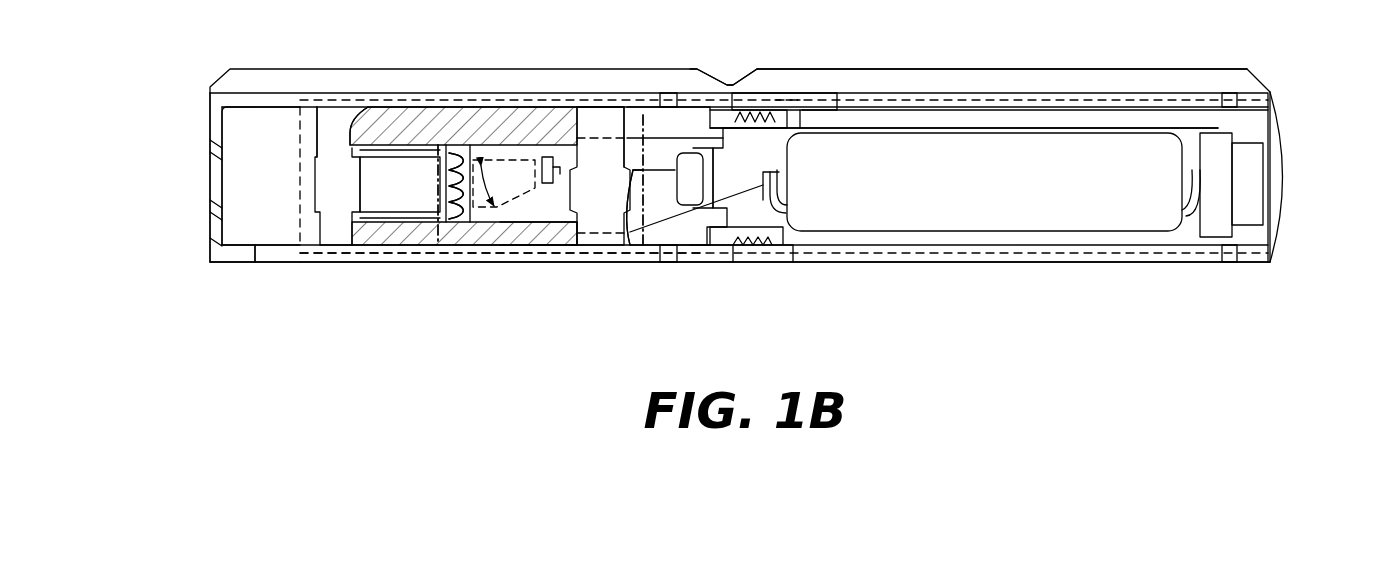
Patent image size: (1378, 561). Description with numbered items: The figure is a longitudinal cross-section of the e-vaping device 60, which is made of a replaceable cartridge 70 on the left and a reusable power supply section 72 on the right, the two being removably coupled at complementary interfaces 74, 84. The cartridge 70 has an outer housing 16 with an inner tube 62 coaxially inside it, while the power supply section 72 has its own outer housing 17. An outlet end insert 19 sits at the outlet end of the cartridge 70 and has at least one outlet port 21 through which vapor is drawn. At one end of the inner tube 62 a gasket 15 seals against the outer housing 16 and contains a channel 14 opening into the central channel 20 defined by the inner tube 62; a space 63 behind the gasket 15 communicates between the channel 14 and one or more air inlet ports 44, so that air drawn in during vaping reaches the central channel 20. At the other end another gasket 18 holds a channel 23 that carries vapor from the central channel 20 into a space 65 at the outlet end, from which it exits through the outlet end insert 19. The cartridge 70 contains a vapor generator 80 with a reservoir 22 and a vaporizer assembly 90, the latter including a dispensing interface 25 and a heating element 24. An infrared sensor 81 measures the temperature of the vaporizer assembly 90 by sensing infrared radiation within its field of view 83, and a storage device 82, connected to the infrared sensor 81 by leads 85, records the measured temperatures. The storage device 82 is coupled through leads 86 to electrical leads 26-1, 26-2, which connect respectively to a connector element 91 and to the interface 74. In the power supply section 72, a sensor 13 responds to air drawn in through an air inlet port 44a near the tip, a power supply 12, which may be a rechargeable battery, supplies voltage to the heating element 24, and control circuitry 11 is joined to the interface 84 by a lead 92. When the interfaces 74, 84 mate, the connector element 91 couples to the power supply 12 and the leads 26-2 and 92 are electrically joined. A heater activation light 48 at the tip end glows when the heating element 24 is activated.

The control circuitry 11 is at (1207, 185).
The power supply 12 is at (984, 182).
The sensor 13 is at (1247, 184).
The channel 14 is at (600, 176).
The gasket 15 is at (590, 130).
The outer housing 16 is at (280, 262).
The outer housing 17 is at (918, 262).
The gasket 18 is at (328, 127).
The outlet end insert 19 is at (222, 262).
The central channel 20 is at (400, 184).
The outlet port 21 is at (208, 150).
The reservoir 22 is at (458, 286).
The channel 23 is at (337, 176).
The heating element 24 is at (437, 160).
The dispensing interface 25 is at (437, 185).
The electrical lead 26-1 is at (651, 243).
The electrical lead 26-2 is at (656, 147).
The air inlet port 44 is at (668, 98).
The air inlet port 44a is at (1229, 93).
The heater activation light 48 is at (1290, 178).
The e-vaping device 60 is at (508, 328).
The inner tube 62 is at (375, 128).
The space 63 is at (695, 176).
The space 65 is at (261, 176).
The cartridge 70 is at (478, 68).
The power supply section 72 is at (1004, 68).
The interface 74 is at (697, 73).
The vapor generator 80 is at (494, 292).
The infrared sensor 81 is at (540, 140).
The storage device 82 is at (702, 148).
The field of view 83 is at (517, 228).
The interface 84 is at (750, 260).
The lead 85 is at (634, 162).
The lead 86 is at (710, 176).
The vaporizer assembly 90 is at (450, 222).
The connector element 91 is at (787, 238).
The lead 92 is at (1100, 126).